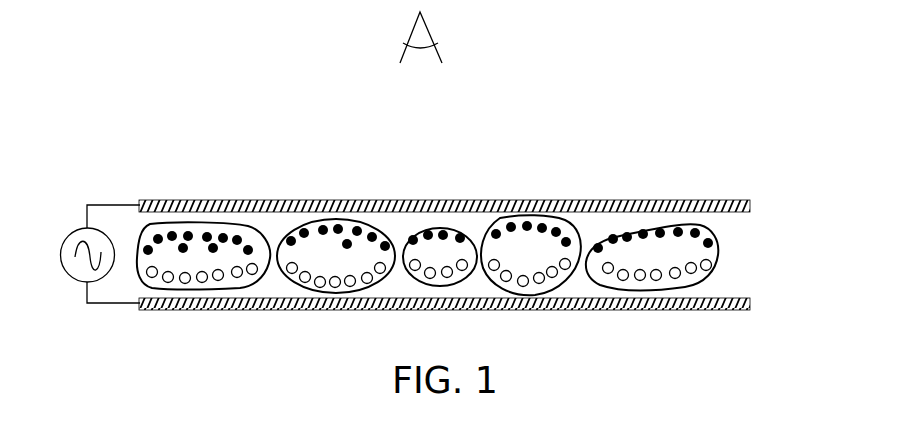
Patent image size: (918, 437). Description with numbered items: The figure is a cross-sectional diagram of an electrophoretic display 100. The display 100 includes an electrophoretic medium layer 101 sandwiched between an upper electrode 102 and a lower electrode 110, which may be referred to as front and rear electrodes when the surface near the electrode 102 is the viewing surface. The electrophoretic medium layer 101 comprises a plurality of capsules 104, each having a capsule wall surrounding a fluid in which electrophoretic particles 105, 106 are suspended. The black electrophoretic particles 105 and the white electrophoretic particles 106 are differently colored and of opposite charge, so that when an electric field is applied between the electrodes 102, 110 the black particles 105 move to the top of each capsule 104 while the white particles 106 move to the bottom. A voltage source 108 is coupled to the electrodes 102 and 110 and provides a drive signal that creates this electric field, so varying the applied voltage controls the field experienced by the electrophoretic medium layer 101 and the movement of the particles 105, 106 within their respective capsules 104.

The display 100 is at (168, 174).
The electrophoretic medium layer 101 is at (797, 210).
The electrode 102 is at (748, 208).
The capsule 104 is at (719, 256).
The black electrophoretic particle 105 is at (716, 241).
The white electrophoretic particle 106 is at (714, 276).
The voltage source 108 is at (63, 243).
The electrode 110 is at (723, 304).